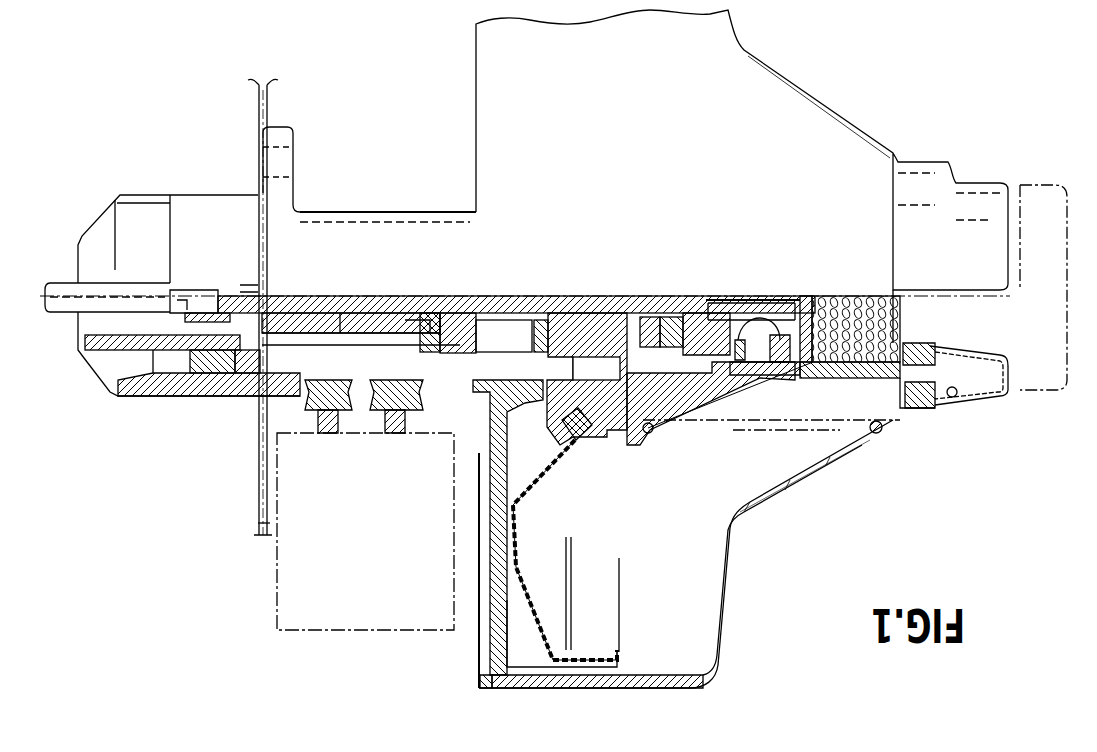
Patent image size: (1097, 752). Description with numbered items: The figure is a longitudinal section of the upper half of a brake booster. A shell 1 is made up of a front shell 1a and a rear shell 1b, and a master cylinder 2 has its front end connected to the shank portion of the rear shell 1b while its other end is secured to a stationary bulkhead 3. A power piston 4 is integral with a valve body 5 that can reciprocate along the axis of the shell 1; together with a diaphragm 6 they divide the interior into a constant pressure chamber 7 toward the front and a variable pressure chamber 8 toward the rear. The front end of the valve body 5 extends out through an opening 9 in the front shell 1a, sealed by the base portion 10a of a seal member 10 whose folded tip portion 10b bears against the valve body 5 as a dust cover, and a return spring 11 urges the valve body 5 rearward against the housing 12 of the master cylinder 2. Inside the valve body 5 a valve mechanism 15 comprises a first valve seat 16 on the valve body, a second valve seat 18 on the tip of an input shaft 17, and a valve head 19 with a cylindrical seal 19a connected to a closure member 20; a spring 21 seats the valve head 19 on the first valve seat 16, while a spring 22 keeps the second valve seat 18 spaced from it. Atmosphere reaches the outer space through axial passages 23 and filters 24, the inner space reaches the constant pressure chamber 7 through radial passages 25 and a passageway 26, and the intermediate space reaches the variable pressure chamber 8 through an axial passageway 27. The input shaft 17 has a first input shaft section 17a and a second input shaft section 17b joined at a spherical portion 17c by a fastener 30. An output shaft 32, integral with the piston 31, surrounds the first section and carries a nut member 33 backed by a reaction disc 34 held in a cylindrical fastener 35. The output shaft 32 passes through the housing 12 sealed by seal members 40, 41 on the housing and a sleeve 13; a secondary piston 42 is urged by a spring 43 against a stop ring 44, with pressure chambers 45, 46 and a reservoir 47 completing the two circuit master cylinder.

The shell 1 is at (744, 565).
The front shell 1a is at (723, 600).
The rear shell 1b is at (477, 655).
The master cylinder 2 is at (258, 450).
The stationary bulkhead 3 is at (258, 523).
The power piston 4 is at (565, 580).
The valve body 5 is at (690, 400).
The diaphragm 6 is at (620, 655).
The constant pressure chamber 7 is at (670, 545).
The variable pressure chamber 8 is at (521, 463).
The opening 9 is at (952, 397).
The seal member 10 is at (985, 398).
The base portion 10a is at (920, 395).
The tip portion 10b is at (930, 350).
The return spring 11 is at (876, 434).
The housing 12 is at (505, 385).
The sleeve 13 is at (287, 340).
The valve mechanism 15 is at (735, 313).
The first valve seat 16 is at (717, 350).
The input shaft 17 is at (600, 292).
The first input shaft section 17a is at (380, 300).
The second input shaft section 17b is at (62, 283).
The spherical portion 17c is at (180, 300).
The second valve seat 18 is at (720, 330).
The valve head 19 is at (688, 398).
The cylindrical seal 19a is at (750, 320).
The closure member 20 is at (840, 340).
The spring 21 is at (740, 365).
The spring 22 is at (780, 300).
The axial passages 23 is at (845, 365).
The filters 24 is at (860, 320).
The radial passages 25 is at (818, 352).
The passageway 26 is at (758, 378).
The axial passageway 27 is at (590, 372).
The fastener 30 is at (210, 313).
The piston 31 is at (262, 408).
The output shaft 32 is at (345, 305).
The nut member 33 is at (668, 338).
The reaction disc 34 is at (645, 340).
The cylindrical fastener 35 is at (598, 428).
The seal member 40 is at (540, 325).
The seal member 41 is at (225, 395).
The secondary piston 42 is at (460, 320).
The spring 43 is at (245, 300).
The stop ring 44 is at (420, 320).
The pressure chamber 45 is at (322, 340).
The pressure chamber 46 is at (508, 335).
The reservoir 47 is at (276, 612).